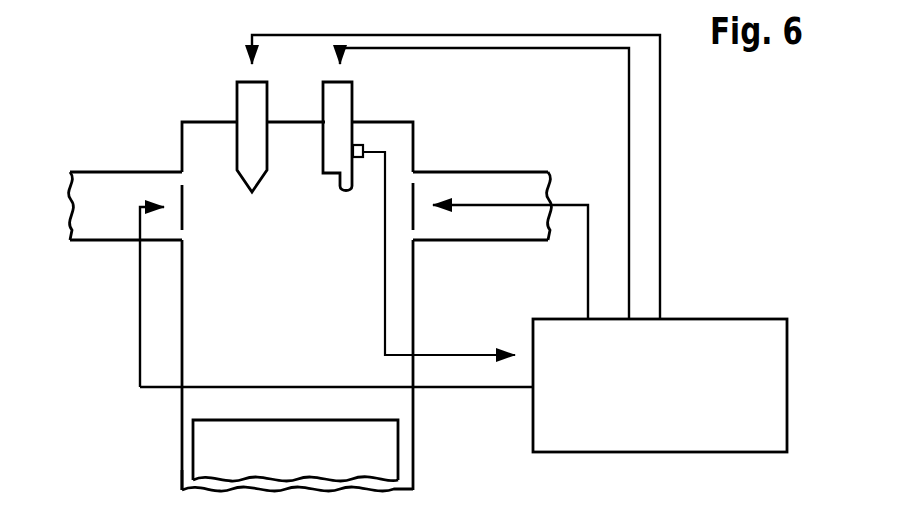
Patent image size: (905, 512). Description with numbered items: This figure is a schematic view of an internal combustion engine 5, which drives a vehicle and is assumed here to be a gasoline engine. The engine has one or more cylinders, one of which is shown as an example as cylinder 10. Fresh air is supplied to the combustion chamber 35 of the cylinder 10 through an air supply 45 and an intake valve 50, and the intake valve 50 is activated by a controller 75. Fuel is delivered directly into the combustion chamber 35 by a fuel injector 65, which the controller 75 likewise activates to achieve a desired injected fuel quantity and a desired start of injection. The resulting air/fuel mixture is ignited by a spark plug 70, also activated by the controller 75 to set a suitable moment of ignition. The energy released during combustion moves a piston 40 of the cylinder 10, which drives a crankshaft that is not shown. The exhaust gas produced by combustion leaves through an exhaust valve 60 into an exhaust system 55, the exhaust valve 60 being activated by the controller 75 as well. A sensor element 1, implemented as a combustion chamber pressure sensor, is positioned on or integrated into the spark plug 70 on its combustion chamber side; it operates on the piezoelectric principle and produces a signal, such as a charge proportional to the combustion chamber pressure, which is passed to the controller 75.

The internal combustion engine 5 is at (126, 106).
The sensor element 1 is at (362, 160).
The cylinder 10 is at (182, 447).
The combustion chamber 35 is at (207, 320).
The piston 40 is at (400, 440).
The air supply 45 is at (98, 190).
The intake valve 50 is at (182, 225).
The exhaust system 55 is at (464, 190).
The exhaust valve 60 is at (415, 225).
The fuel injector 65 is at (237, 93).
The spark plug 70 is at (352, 94).
The controller 75 is at (689, 318).